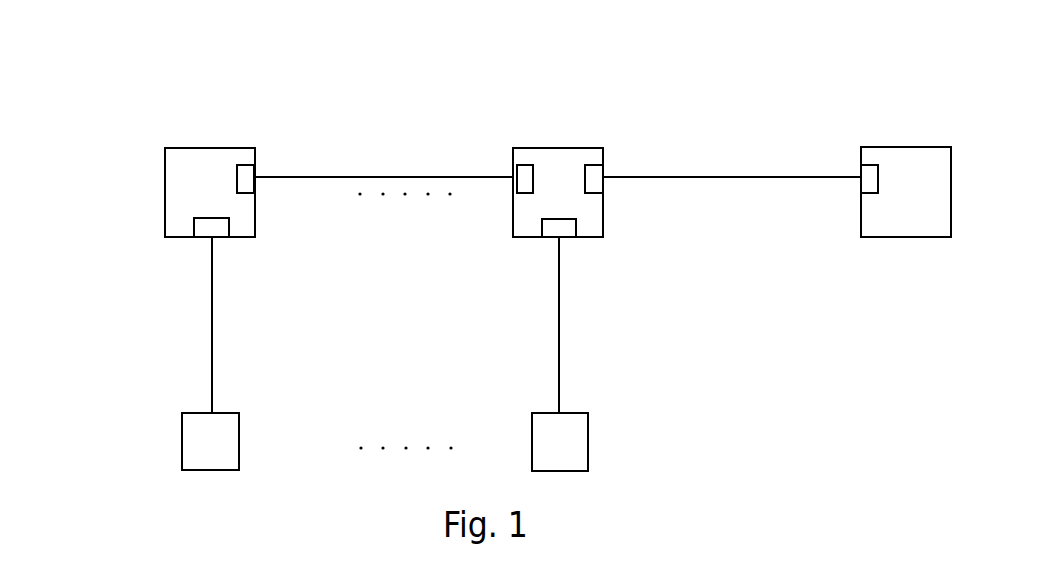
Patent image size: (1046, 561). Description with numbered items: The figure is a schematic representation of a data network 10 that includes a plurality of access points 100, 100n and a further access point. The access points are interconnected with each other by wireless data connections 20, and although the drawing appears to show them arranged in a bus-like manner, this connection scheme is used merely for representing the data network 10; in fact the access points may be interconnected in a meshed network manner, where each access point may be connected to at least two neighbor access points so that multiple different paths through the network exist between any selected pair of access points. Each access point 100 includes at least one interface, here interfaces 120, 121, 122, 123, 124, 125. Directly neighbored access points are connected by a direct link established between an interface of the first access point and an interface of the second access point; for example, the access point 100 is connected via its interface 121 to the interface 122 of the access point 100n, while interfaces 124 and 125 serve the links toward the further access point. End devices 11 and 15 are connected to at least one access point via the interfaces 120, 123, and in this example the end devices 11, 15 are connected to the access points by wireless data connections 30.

The data network 10 is at (117, 146).
The wireless data connections 20 is at (325, 176).
The wireless data connections 30 is at (210, 313).
The access point 100 is at (192, 160).
The access point 100n is at (573, 167).
The interface 120 is at (208, 218).
The interface 121 is at (237, 177).
The interface 122 is at (534, 183).
The interface 123 is at (553, 218).
The interface 124 is at (585, 189).
The interface 125 is at (872, 196).
The end device 11 is at (220, 434).
The end device 15 is at (575, 435).